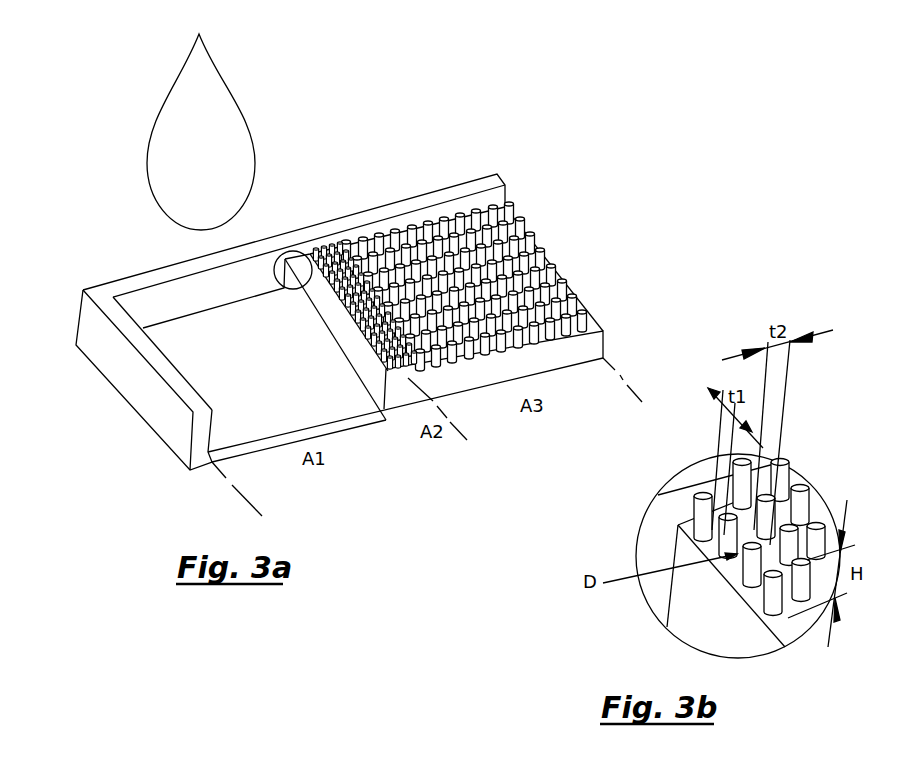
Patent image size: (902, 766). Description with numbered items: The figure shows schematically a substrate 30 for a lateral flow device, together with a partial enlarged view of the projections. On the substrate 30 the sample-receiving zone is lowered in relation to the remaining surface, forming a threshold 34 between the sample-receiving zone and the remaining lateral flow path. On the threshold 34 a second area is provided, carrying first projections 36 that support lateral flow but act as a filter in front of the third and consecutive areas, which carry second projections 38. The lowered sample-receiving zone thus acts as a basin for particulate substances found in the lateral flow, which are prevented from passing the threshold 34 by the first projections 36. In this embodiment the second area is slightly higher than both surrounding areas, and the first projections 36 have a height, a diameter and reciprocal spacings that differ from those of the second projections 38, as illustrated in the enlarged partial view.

The substrate 30 is at (137, 383).
The threshold 34 is at (340, 342).
The first projections 36 is at (296, 251).
The second projections 38 is at (558, 248).